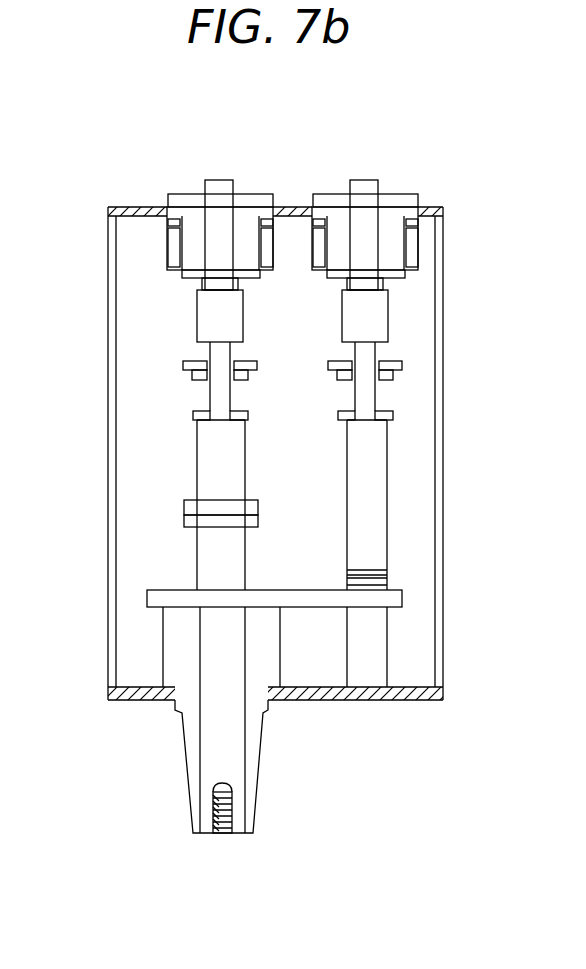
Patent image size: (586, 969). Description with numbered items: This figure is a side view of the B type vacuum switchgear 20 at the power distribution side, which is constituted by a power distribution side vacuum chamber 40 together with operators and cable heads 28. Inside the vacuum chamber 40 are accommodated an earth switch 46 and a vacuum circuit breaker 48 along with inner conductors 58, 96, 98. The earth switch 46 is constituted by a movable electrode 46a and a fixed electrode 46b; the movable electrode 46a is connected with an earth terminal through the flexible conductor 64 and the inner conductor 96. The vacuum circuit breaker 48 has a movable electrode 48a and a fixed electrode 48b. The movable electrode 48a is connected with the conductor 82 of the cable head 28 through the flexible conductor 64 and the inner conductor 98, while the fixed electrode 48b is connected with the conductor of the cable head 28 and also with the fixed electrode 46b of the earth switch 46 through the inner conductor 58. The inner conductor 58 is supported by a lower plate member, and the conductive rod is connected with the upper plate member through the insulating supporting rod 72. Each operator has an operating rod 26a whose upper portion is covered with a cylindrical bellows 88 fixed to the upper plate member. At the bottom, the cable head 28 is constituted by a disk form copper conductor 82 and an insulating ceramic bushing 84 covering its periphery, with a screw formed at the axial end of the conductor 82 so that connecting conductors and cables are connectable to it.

The vacuum switchgear 20 is at (187, 112).
The operating rod 26a is at (225, 204).
The cable head 28 is at (268, 737).
The vacuum chamber 40 is at (443, 464).
The earth switch 46 is at (397, 573).
The movable electrode 46a is at (362, 572).
The fixed electrode 46b is at (368, 586).
The vacuum circuit breaker 48 is at (171, 516).
The movable electrode 48a is at (248, 509).
The fixed electrode 48b is at (252, 520).
The inner conductor 58 is at (153, 594).
The flexible conductor 64 is at (392, 406).
The insulating supporting rod 72 is at (207, 313).
The copper conductor 82 is at (233, 762).
The insulating ceramic bushing 84 is at (192, 752).
The bellows 88 is at (418, 238).
The inner conductor 96 is at (392, 355).
The inner conductor 98 is at (185, 362).